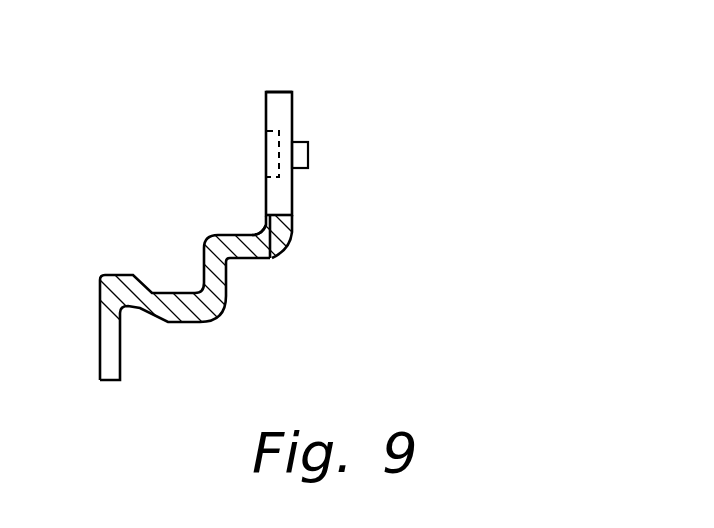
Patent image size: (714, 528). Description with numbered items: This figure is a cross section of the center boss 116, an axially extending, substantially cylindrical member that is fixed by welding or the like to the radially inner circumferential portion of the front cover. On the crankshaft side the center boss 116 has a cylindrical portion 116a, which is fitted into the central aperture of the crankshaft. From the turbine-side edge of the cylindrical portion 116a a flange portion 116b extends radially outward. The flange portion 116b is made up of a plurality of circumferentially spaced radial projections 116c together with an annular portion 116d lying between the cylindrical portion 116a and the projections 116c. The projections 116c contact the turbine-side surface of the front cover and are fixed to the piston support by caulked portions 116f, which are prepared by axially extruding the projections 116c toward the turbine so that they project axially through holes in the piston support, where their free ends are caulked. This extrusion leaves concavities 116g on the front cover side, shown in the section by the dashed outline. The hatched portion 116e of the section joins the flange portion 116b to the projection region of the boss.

The center boss 116 is at (340, 264).
The cylindrical portion 116a is at (172, 290).
The flange portion 116b is at (243, 153).
The radial projections 116c is at (283, 93).
The annular portion 116d is at (262, 227).
The connecting portion 116e is at (277, 240).
The caulked portions 116f is at (300, 142).
The concavities 116g is at (262, 128).